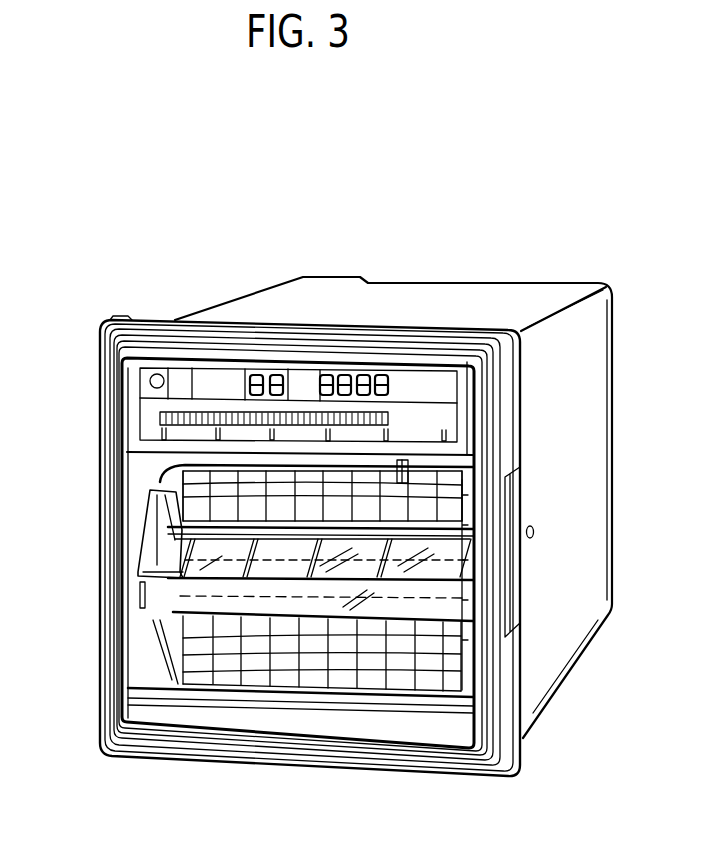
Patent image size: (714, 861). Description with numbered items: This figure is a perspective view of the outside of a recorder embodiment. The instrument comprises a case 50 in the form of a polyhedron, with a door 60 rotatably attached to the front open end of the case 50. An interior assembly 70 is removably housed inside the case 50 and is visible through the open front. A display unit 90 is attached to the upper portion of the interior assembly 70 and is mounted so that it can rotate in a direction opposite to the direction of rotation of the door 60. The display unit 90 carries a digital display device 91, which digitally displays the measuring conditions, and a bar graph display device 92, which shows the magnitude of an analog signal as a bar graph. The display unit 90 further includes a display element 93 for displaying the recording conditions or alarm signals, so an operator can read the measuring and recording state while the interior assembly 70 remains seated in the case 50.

The case 50 is at (593, 397).
The door 60 is at (100, 627).
The interior assembly 70 is at (160, 468).
The display unit 90 is at (140, 434).
The digital display device 91 is at (277, 372).
The bar graph display device 92 is at (160, 414).
The display element 93 is at (150, 380).